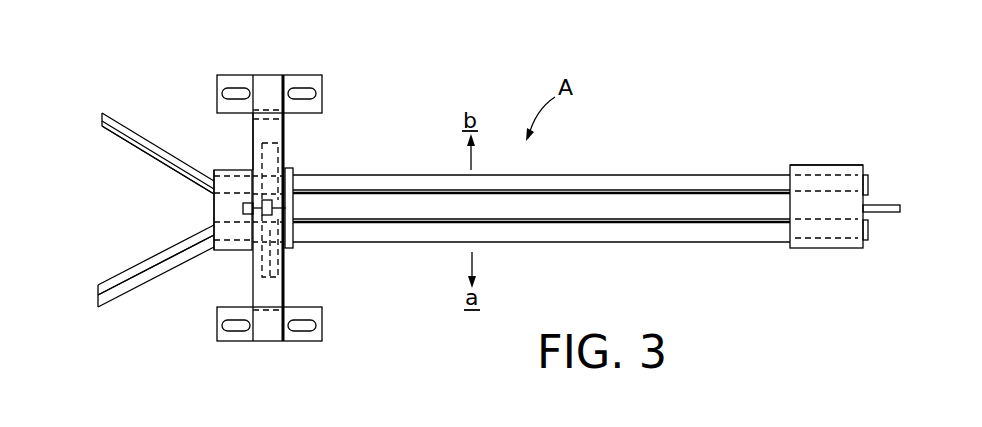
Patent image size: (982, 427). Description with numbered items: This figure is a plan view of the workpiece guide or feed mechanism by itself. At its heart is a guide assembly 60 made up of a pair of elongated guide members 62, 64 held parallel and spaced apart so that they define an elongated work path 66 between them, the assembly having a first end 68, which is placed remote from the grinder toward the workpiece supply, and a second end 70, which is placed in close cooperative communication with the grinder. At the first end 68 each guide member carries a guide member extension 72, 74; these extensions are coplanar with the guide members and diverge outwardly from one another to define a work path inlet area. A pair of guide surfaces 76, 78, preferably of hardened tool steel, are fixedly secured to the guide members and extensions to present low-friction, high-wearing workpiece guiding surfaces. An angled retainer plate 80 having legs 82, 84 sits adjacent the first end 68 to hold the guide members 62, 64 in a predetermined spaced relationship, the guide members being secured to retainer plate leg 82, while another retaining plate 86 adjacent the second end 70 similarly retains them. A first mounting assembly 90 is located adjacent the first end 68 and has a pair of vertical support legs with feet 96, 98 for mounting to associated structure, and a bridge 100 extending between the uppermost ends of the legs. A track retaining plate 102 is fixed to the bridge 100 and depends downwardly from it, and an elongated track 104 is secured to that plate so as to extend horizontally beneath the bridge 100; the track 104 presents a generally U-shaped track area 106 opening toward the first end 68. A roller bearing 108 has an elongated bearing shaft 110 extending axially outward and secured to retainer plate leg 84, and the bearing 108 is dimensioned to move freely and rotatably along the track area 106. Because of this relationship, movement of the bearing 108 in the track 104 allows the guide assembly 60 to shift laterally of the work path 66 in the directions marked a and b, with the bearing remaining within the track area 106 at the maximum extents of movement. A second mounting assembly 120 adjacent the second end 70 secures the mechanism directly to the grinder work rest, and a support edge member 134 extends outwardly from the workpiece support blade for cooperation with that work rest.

The guide assembly 60 is at (657, 249).
The guide member 62 is at (713, 233).
The guide member 64 is at (668, 143).
The work path 66 is at (701, 203).
The first end 68 is at (143, 208).
The second end 70 is at (904, 219).
The guide member extension 72 is at (140, 280).
The guide member extension 74 is at (140, 133).
The guide surface 76 is at (510, 222).
The guide surface 78 is at (423, 197).
The angled retainer plate 80 is at (202, 110).
The retainer plate leg 82 is at (230, 173).
The retainer plate leg 84 is at (258, 195).
The retaining plate 86 is at (843, 250).
The first mounting assembly 90 is at (306, 174).
The foot 96 is at (322, 320).
The foot 98 is at (320, 85).
The bridge 100 is at (285, 127).
The track retaining plate 102 is at (296, 203).
The track 104 is at (287, 262).
The U-shaped track area 106 is at (278, 160).
The roller bearing 108 is at (290, 223).
The bearing shaft 110 is at (197, 188).
The second mounting assembly 120 is at (915, 105).
The support edge member 134 is at (885, 215).